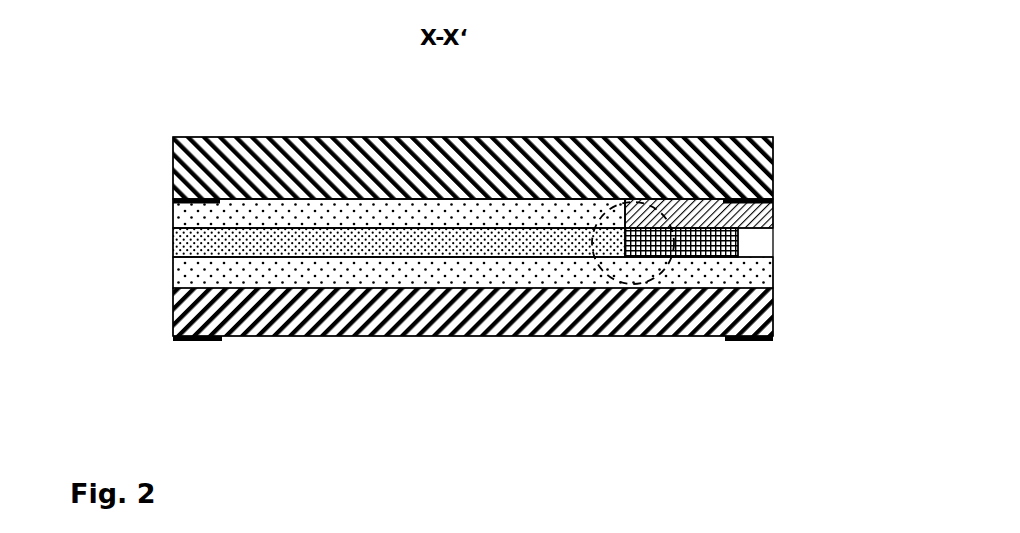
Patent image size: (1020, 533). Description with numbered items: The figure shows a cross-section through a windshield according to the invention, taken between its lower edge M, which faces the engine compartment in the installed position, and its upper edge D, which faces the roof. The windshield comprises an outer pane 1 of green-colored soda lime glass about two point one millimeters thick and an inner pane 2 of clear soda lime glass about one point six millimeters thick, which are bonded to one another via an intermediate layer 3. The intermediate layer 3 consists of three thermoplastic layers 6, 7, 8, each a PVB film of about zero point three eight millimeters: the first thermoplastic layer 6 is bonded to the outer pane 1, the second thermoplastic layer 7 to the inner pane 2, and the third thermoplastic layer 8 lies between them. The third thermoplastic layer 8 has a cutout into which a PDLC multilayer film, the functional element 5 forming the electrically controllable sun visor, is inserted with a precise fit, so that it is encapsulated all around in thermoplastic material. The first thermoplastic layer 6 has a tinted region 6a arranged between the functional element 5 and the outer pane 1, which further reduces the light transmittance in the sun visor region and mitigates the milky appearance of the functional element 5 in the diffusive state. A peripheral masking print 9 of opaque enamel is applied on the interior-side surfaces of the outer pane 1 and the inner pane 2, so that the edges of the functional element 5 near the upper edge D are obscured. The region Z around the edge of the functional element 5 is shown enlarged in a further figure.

The outer pane 1 is at (184, 140).
The inner pane 2 is at (252, 336).
The intermediate layer 3 is at (168, 288).
The functional element 5 is at (727, 236).
The first thermoplastic layer 6 is at (180, 213).
The tinted region 6a is at (773, 214).
The second thermoplastic layer 7 is at (757, 273).
The third thermoplastic layer 8 is at (200, 235).
The masking print 9 is at (773, 199).
The lower edge M is at (171, 152).
The upper edge D is at (776, 155).
The region Z is at (648, 283).